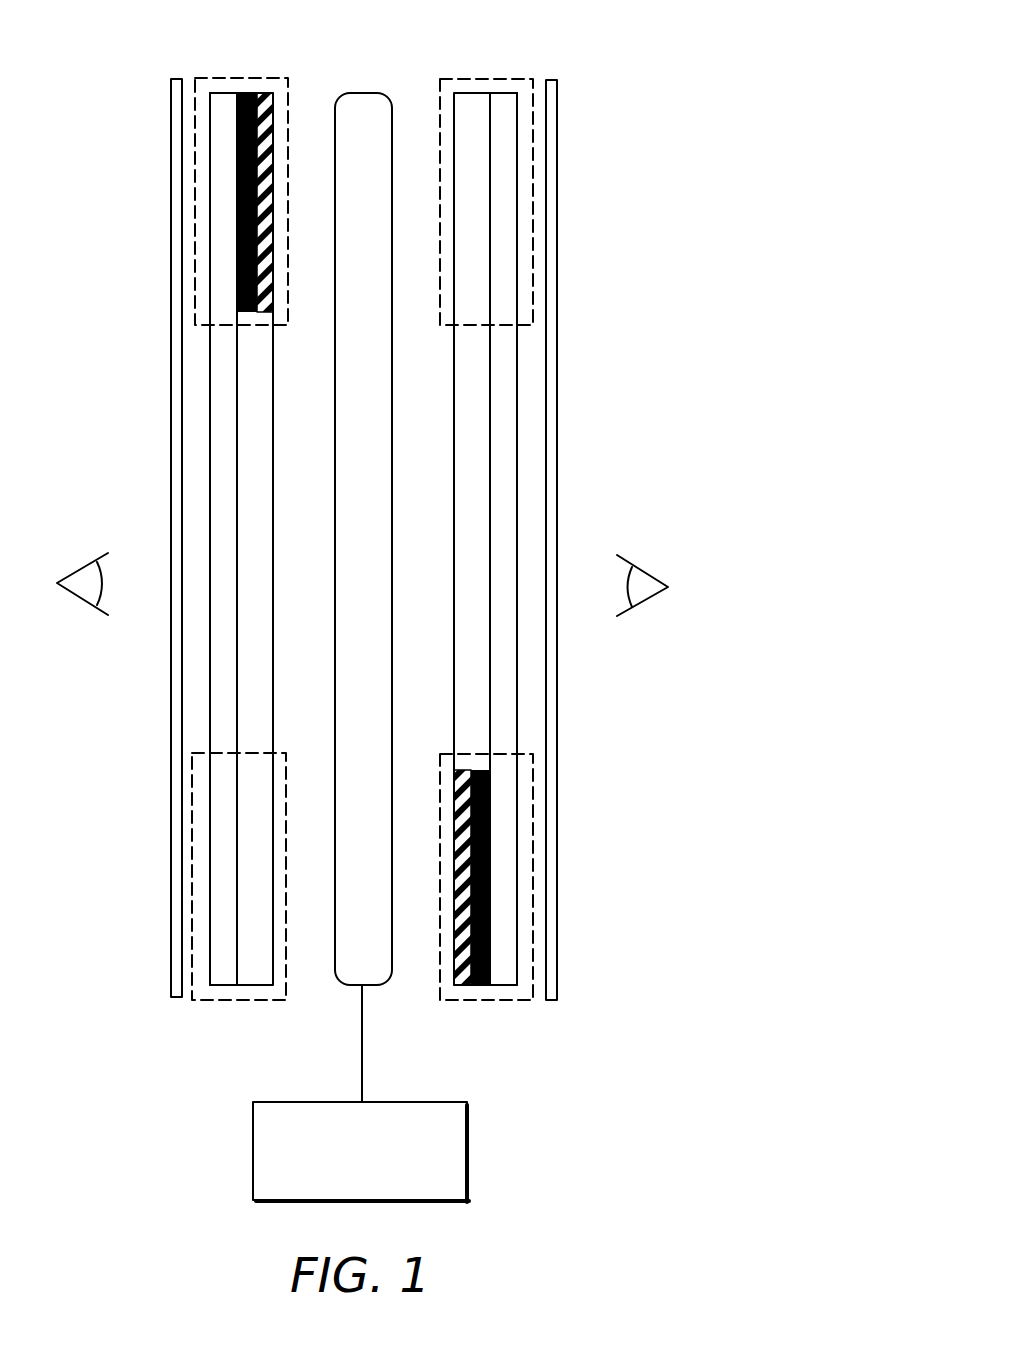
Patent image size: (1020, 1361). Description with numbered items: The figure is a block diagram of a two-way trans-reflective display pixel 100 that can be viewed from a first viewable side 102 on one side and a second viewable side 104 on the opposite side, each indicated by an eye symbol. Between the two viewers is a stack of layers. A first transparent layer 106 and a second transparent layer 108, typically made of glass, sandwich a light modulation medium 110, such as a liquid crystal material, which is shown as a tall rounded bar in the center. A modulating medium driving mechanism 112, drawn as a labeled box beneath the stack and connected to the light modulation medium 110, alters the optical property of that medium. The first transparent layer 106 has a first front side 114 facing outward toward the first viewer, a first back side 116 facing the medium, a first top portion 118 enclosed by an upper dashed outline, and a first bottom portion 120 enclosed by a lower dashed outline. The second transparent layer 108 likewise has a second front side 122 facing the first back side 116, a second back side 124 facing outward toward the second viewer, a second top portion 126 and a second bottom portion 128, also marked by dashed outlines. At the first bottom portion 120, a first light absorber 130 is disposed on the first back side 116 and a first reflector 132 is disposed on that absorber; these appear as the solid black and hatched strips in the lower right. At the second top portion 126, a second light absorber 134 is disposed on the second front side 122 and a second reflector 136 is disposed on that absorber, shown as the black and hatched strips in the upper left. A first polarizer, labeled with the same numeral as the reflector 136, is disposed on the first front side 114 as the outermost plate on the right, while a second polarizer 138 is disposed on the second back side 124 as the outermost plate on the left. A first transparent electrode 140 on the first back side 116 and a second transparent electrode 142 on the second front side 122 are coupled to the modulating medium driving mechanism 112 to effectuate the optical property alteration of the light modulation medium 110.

The two-way trans-reflective display pixel 100 is at (716, 32).
The first viewable side 102 is at (640, 566).
The second viewable side 104 is at (85, 564).
The first transparent layer 106 is at (508, 93).
The second transparent layer 108 is at (218, 987).
The light modulation medium 110 is at (363, 93).
The modulating medium driving mechanism 112 is at (253, 1150).
The first front side 114 is at (518, 677).
The first back side 116 is at (488, 615).
The first top portion 118 is at (441, 79).
The first bottom portion 120 is at (522, 1000).
The second front side 122 is at (238, 615).
The second back side 124 is at (208, 675).
The second top portion 126 is at (200, 78).
The second bottom portion 128 is at (277, 1000).
The first light absorber 130 is at (477, 987).
The first reflector 132 is at (460, 986).
The second light absorber 134 is at (247, 92).
The second reflector 136 is at (262, 92).
The second polarizer 138 is at (171, 178).
The first transparent electrode 140 is at (473, 93).
The second transparent electrode 142 is at (252, 987).